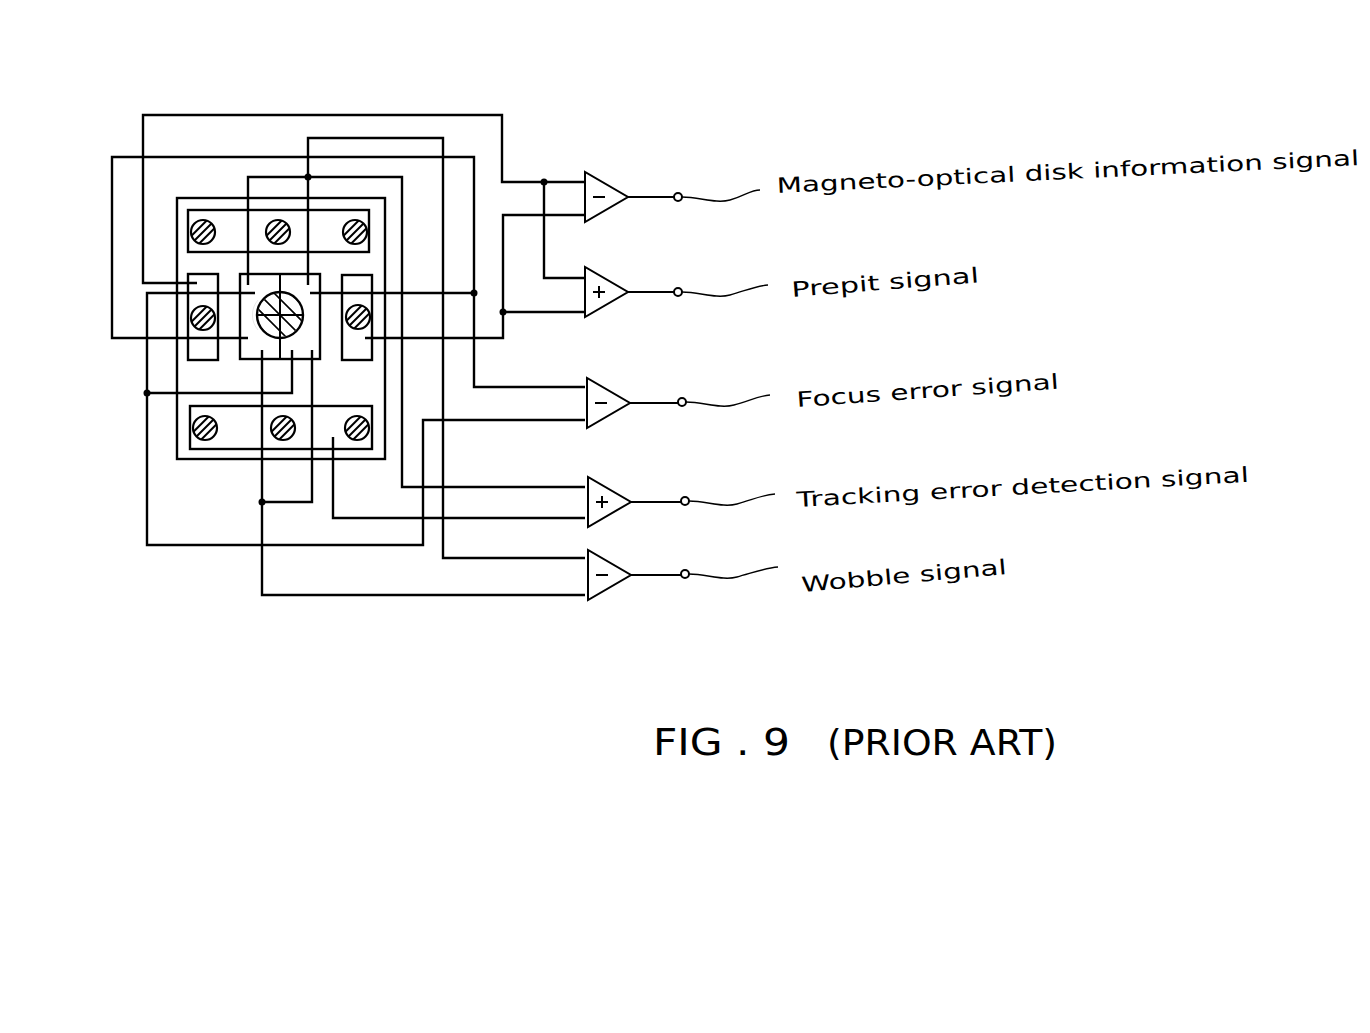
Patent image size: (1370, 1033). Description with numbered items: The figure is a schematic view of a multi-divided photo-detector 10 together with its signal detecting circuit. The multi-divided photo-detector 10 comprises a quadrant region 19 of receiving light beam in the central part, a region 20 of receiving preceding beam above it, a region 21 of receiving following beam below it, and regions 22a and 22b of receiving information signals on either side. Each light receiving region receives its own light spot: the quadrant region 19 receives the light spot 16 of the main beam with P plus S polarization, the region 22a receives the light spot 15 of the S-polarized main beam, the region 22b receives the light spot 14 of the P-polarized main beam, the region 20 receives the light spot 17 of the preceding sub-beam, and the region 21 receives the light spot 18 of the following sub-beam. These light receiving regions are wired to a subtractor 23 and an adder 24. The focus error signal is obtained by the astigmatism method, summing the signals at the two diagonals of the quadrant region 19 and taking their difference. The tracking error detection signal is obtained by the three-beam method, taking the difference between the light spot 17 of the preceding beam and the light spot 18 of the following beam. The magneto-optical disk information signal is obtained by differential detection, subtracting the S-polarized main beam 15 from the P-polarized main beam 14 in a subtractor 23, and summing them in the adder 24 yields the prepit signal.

The multi-divided photo-detector 10 is at (134, 548).
The light spot of the main beam (P polarization) 14 is at (365, 305).
The light spot of the main beam (S polarization) 15 is at (190, 310).
The light spot of the main beam (P+S polarization) 16 is at (147, 393).
The light spot of the preceding beam 17 is at (203, 220).
The light spot of the following beam 18 is at (353, 440).
The quadrant region of receiving light beam 19 is at (247, 273).
The region of receiving preceding beam 20 is at (185, 235).
The region of receiving following beam 21 is at (193, 436).
The region of receiving information signals 22a is at (256, 320).
The region of receiving information signals 22b is at (368, 348).
The subtractor 23 is at (605, 175).
The adder 24 is at (607, 270).